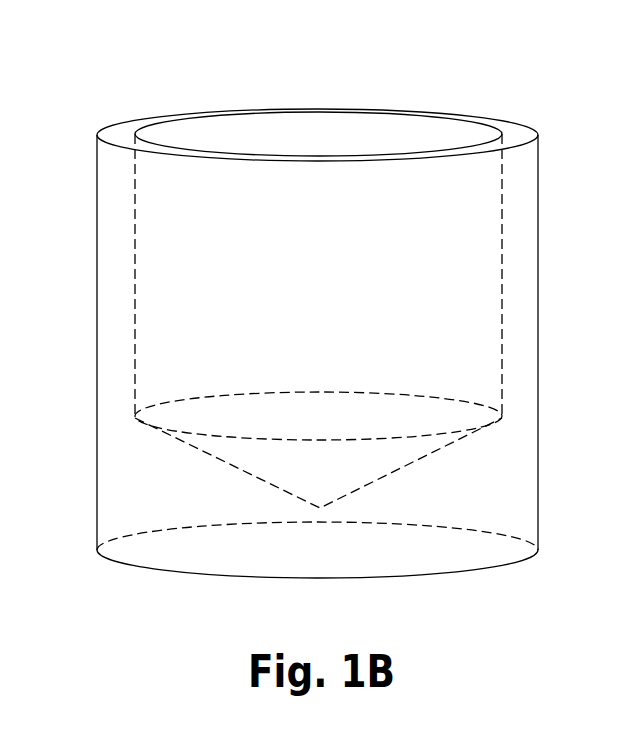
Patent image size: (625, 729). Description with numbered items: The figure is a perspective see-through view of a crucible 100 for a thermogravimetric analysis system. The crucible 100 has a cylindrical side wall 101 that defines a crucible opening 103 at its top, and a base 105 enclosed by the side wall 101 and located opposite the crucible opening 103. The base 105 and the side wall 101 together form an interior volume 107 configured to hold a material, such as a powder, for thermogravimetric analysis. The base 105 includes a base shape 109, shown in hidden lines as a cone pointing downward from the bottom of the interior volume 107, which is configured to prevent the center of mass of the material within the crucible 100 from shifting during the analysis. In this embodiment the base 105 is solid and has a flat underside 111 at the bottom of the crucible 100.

The crucible 100 is at (88, 119).
The side wall 101 is at (110, 262).
The crucible opening 103 is at (493, 127).
The base 105 is at (155, 472).
The interior volume 107 is at (352, 148).
The base shape 109 is at (380, 463).
The flat underside 111 is at (162, 573).